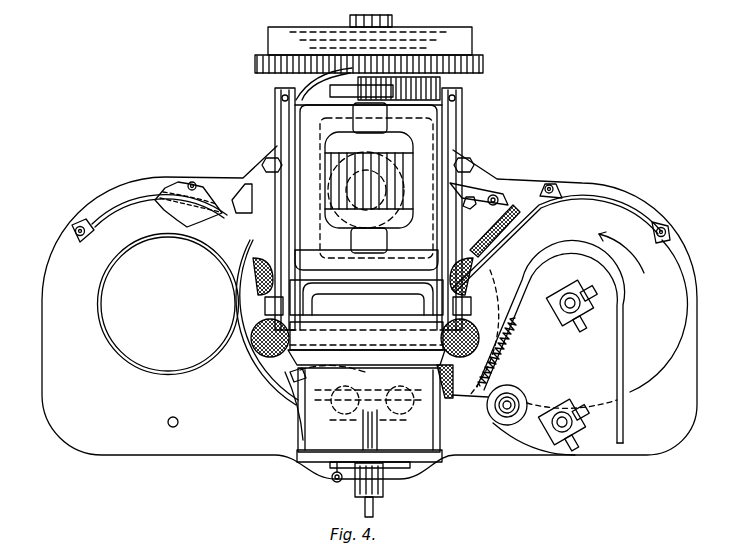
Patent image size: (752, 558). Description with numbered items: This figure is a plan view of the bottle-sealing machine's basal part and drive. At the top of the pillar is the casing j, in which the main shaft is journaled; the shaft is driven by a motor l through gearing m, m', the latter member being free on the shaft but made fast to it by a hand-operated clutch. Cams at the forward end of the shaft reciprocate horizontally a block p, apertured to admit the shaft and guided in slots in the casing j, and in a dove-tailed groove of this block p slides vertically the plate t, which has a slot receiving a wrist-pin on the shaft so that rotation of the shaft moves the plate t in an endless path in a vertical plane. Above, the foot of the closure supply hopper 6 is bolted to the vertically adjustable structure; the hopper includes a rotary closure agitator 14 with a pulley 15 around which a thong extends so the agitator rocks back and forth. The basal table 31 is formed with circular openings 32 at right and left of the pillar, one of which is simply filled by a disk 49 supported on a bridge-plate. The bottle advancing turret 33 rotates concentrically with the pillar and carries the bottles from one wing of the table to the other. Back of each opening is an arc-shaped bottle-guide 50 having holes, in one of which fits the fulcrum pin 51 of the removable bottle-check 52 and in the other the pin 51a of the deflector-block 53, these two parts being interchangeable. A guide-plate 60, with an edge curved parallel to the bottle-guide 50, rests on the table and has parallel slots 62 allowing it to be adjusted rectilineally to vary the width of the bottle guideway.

The gearing m is at (370, 57).
The gearing m' is at (384, 65).
The casing j is at (300, 152).
The motor l is at (400, 170).
The block p is at (478, 335).
The plate t is at (292, 376).
The closure supply hopper 6 is at (430, 437).
The rotary closure agitator 14 is at (410, 465).
The pulley 15 is at (340, 483).
The table 31 is at (369, 312).
The circular openings 32 is at (128, 367).
The bottle advancing turret 33 is at (267, 383).
The disk 49 is at (160, 365).
The arc-shaped bottle-guide 50 is at (135, 195).
The fulcrum pin 51 is at (553, 184).
The pin 51a is at (192, 181).
The bottle-check 52 is at (515, 197).
The deflector-block 53 is at (205, 197).
The guide-plate 60 is at (617, 415).
The parallel slots 62 is at (575, 332).